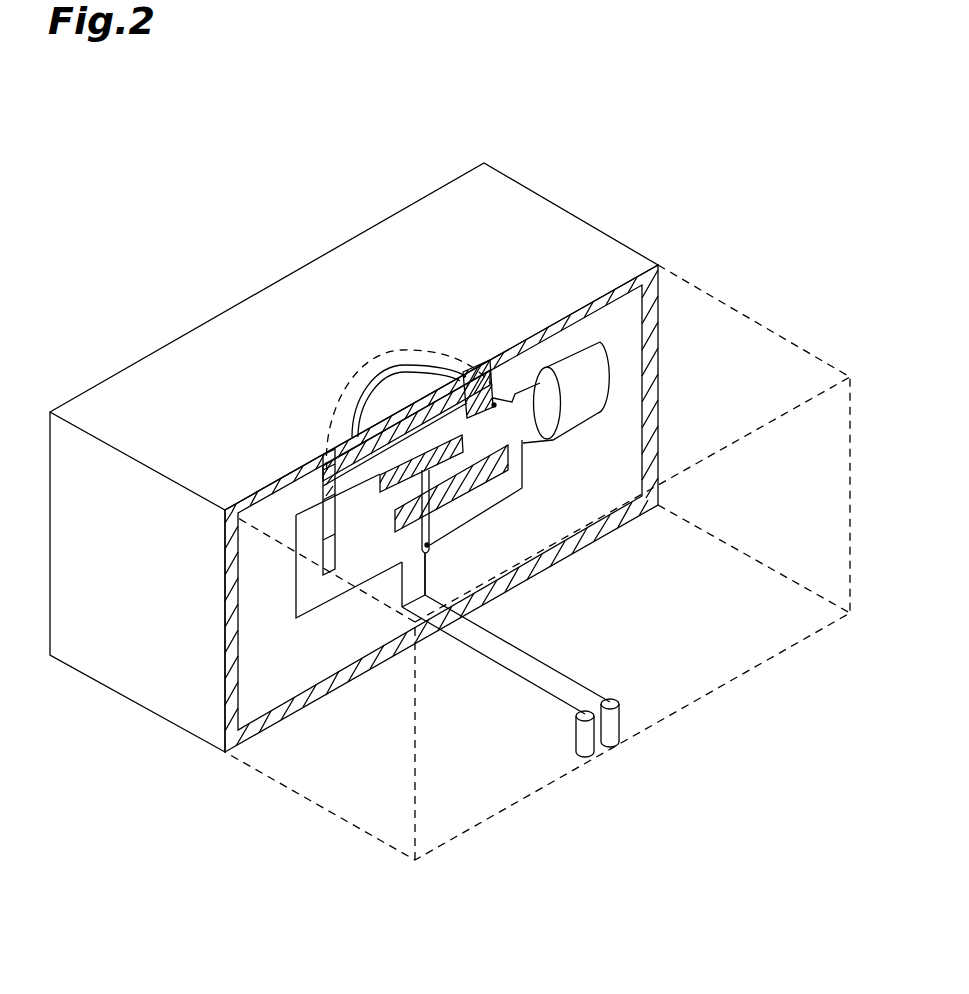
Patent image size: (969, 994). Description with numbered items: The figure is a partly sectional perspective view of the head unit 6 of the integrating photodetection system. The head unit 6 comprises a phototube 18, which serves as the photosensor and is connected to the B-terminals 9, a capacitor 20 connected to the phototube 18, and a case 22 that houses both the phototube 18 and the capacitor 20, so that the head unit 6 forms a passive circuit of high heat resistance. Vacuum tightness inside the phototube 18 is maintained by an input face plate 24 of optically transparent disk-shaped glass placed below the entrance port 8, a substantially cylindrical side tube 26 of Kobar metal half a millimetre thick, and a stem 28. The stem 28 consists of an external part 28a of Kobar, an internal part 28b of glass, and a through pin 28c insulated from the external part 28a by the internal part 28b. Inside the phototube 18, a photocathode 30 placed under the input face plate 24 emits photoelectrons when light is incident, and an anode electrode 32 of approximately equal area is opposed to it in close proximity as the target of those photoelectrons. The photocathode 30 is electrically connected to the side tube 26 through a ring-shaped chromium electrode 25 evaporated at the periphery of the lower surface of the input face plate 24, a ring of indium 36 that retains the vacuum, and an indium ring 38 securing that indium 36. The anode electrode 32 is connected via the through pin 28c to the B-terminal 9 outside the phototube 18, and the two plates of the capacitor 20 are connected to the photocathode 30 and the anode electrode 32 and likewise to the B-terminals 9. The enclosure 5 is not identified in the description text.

The casing 5 is at (563, 208).
The head unit 6 is at (290, 791).
The entrance port 8 is at (410, 350).
The B-terminals 9 is at (608, 750).
The phototube 18 is at (267, 593).
The capacitor 20 is at (593, 380).
The case 22 is at (658, 380).
The input face plate 24 is at (466, 372).
The chromium electrode 25 is at (492, 380).
The side tube 26 is at (524, 442).
The stem 28 is at (623, 582).
The external part 28a is at (482, 487).
The internal part 28b is at (444, 470).
The through pin 28c is at (430, 550).
The photocathode 30 is at (345, 415).
The anode electrode 32 is at (512, 472).
The indium 36 is at (336, 570).
The indium ring 38 is at (323, 458).